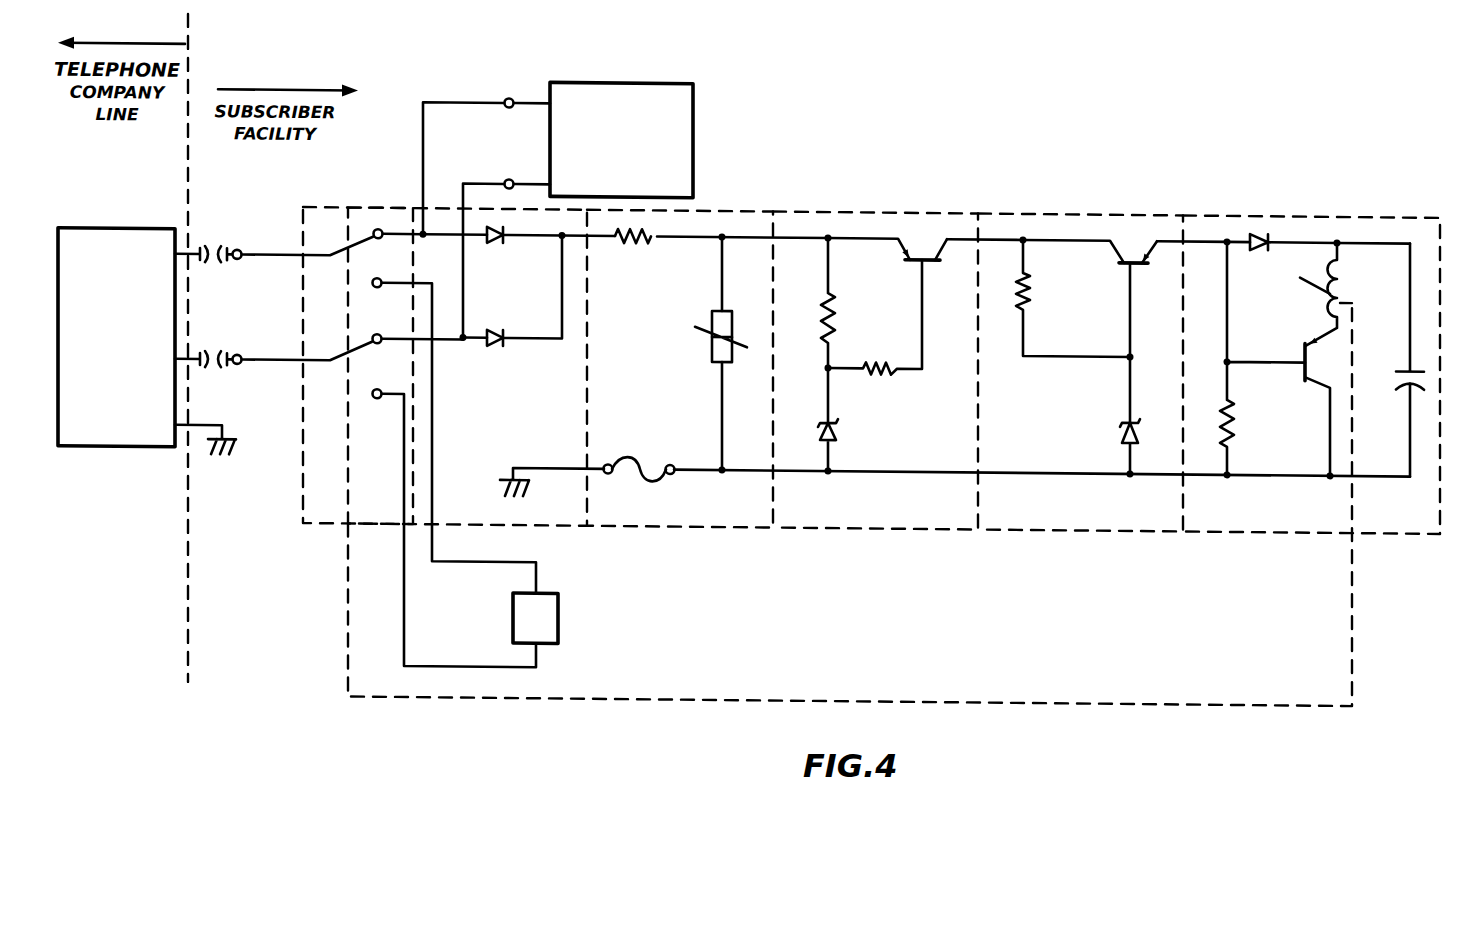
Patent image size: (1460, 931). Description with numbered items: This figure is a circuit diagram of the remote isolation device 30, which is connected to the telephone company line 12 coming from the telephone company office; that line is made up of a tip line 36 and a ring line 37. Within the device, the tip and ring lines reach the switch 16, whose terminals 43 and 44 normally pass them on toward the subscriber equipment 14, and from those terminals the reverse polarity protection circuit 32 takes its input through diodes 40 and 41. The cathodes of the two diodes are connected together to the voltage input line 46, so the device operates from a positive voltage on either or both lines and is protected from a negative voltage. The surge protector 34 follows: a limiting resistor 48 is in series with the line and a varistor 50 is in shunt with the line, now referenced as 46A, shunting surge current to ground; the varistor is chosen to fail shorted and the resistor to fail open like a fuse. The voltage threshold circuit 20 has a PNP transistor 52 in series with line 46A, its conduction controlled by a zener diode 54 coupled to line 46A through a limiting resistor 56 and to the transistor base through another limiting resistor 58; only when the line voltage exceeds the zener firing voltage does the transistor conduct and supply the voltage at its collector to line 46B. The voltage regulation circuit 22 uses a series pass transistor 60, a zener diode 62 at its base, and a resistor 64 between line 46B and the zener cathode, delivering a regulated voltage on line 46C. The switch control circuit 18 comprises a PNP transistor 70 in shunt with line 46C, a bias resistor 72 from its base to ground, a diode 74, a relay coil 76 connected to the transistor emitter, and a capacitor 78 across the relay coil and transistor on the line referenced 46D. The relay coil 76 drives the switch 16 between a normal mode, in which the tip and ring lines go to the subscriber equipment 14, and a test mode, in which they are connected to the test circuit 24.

The telephone company line 12 is at (227, 478).
The subscriber equipment 14 is at (695, 86).
The switch 16 is at (312, 525).
The switch control circuit 18 is at (1303, 524).
The voltage threshold circuit 20 is at (908, 524).
The voltage regulation circuit 22 is at (1100, 524).
The test circuit 24 is at (560, 612).
The remote isolation device 30 is at (1028, 160).
The reverse polarity protection circuit 32 is at (552, 524).
The surge protector 34 is at (748, 524).
The tip line 36 is at (274, 265).
The ring line 37 is at (230, 352).
The diode 40 is at (494, 245).
The diode 41 is at (512, 308).
The terminal 43 is at (398, 222).
The terminal 44 is at (390, 334).
The voltage input line 46 is at (590, 240).
The voltage input line 46A is at (704, 240).
The voltage input line 46B is at (964, 236).
The regulated input voltage line 46C is at (1160, 243).
The regulated input voltage line 46D is at (1285, 220).
The resistor 48 is at (656, 243).
The varistor 50 is at (712, 358).
The transistor 52 is at (934, 262).
The zener diode 54 is at (836, 424).
The limiting resistor 56 is at (836, 325).
The limiting resistor 58 is at (901, 356).
The transistor 60 is at (1123, 262).
The zener diode 62 is at (1122, 428).
The resistor 64 is at (1030, 298).
The transistor 70 is at (1304, 376).
The bias resistor 72 is at (1218, 424).
The diode 74 is at (1258, 246).
The relay coil 76 is at (1342, 272).
The capacitor 78 is at (1405, 360).